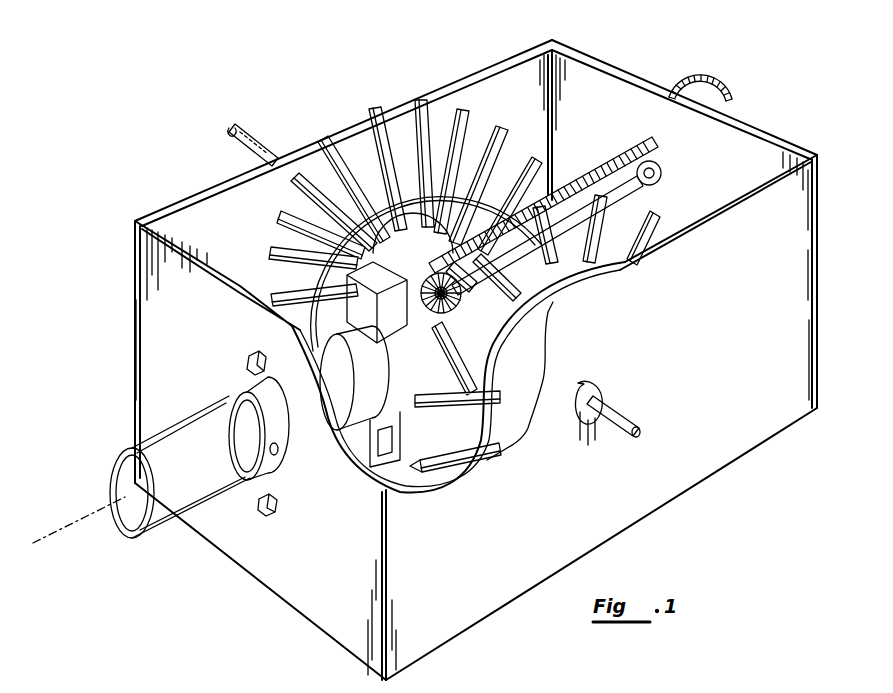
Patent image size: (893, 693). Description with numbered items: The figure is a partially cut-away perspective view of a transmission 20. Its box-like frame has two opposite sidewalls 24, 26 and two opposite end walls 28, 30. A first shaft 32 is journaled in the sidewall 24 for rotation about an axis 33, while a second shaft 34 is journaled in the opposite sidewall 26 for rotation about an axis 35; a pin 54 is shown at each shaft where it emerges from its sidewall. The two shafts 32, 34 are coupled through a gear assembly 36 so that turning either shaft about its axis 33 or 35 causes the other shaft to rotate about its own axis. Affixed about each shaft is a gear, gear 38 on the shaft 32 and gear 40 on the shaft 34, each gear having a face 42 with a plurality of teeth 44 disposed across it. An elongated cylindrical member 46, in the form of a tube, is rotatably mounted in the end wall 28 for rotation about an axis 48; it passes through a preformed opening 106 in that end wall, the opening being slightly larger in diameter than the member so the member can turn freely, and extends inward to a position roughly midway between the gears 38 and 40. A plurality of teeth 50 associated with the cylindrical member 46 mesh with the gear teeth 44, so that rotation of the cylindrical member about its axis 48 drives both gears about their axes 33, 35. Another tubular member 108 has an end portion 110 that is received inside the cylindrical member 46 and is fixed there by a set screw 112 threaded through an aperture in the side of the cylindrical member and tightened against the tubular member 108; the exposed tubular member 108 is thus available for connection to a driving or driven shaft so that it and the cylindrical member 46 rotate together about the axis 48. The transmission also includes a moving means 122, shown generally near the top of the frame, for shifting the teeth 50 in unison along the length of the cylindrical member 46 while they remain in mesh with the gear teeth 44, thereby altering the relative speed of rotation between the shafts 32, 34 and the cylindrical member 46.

The transmission 20 is at (427, 340).
The sidewall 24 is at (215, 183).
The sidewall 26 is at (760, 427).
The end wall 28 is at (260, 560).
The end wall 30 is at (767, 131).
The shaft 32 is at (247, 140).
The axis 33 is at (218, 124).
The shaft 34 is at (607, 423).
The axis 35 is at (740, 503).
The gear assembly 36 is at (480, 287).
The gear 38 is at (427, 143).
The gear 40 is at (553, 287).
The face 42 is at (467, 143).
The teeth 44 is at (377, 107).
The cylindrical member 46 is at (261, 433).
The axis 48 is at (141, 489).
The teeth 50 is at (395, 400).
The pin 54 is at (226, 133).
The opening 106 is at (285, 443).
The tubular member 108 is at (157, 513).
The end portion 110 is at (200, 483).
The set screw 112 is at (270, 448).
The moving means 122 is at (733, 88).